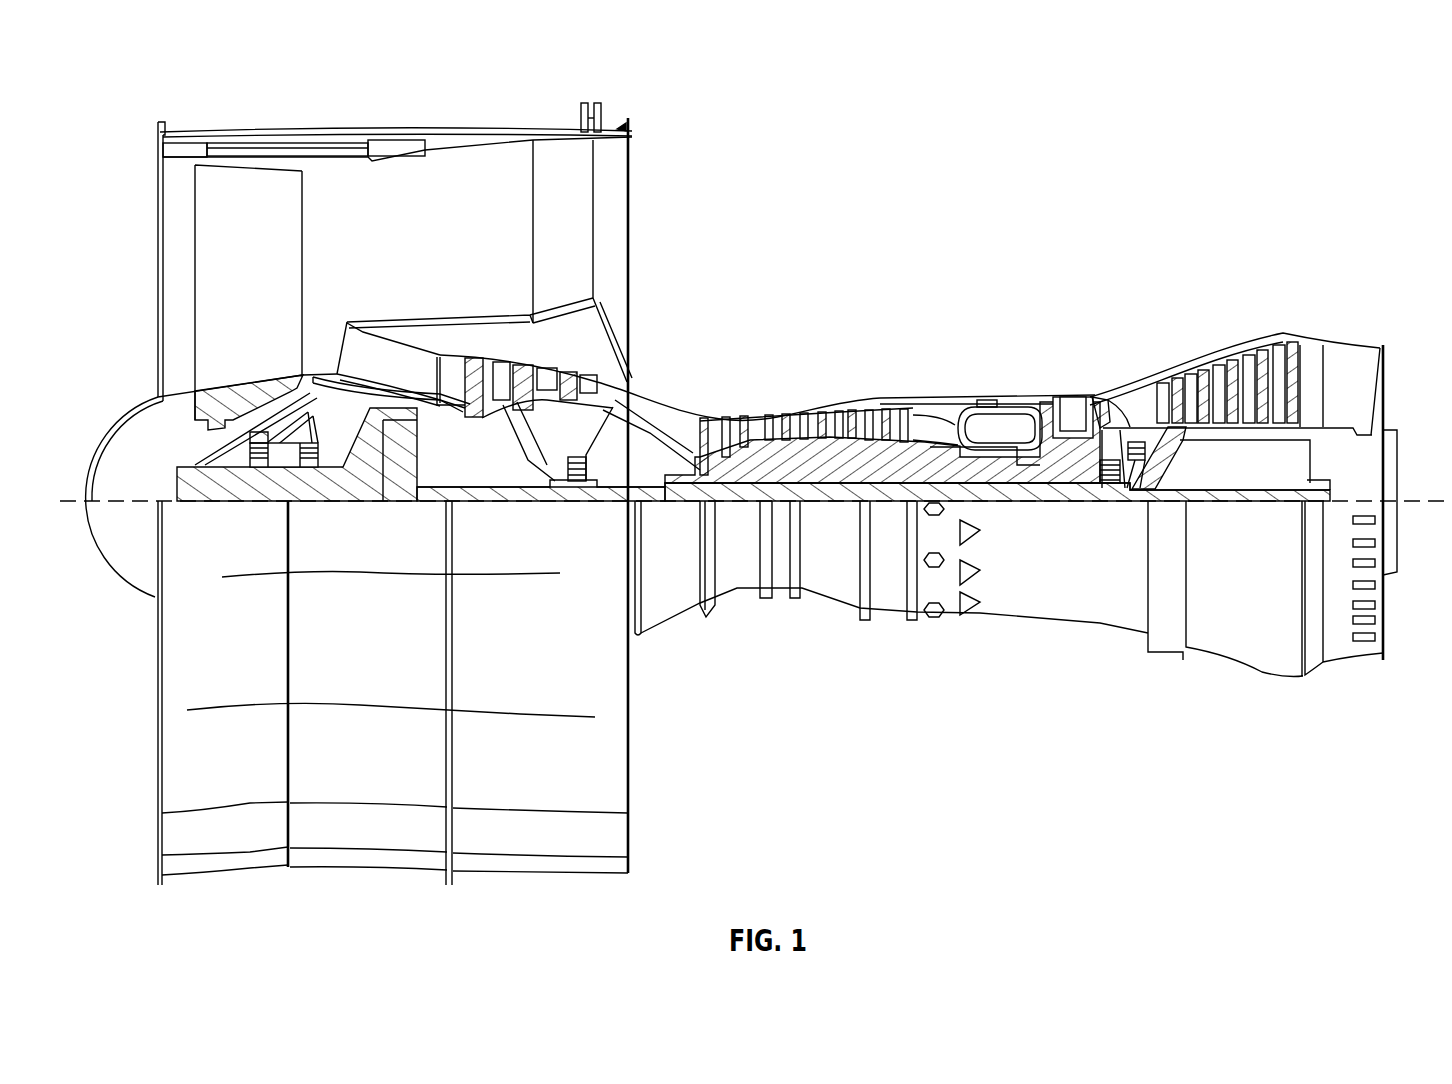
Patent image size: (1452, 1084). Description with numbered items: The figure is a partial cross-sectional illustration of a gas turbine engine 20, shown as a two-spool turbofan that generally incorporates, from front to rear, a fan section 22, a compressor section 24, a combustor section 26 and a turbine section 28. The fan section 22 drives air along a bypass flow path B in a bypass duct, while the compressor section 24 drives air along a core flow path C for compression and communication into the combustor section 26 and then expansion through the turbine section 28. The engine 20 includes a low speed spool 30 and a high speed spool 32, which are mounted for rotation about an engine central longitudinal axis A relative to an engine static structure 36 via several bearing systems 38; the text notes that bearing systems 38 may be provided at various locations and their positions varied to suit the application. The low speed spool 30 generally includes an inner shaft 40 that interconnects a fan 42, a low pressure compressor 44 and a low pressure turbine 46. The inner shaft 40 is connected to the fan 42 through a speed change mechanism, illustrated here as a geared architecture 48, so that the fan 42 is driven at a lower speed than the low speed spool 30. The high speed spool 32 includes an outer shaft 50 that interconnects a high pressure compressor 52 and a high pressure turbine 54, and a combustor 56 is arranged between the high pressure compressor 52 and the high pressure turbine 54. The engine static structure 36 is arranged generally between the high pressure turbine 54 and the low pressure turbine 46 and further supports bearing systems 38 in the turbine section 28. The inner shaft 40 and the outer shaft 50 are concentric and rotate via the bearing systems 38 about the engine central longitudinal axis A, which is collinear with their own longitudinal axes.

The gas turbine engine 20 is at (1223, 130).
The fan section 22 is at (266, 123).
The compressor section 24 is at (819, 360).
The combustor section 26 is at (975, 361).
The turbine section 28 is at (1174, 298).
The low speed spool 30 is at (852, 503).
The high speed spool 32 is at (905, 432).
The engine static structure 36 is at (893, 618).
The bearing systems 38 is at (265, 468).
The inner shaft 40 is at (643, 503).
The fan 42 is at (275, 263).
The low pressure compressor 44 is at (545, 373).
The low pressure turbine 46 is at (1240, 362).
The geared architecture 48 is at (396, 466).
The outer shaft 50 is at (1022, 484).
The high pressure compressor 52 is at (808, 466).
The high pressure turbine 54 is at (1073, 393).
The combustor 56 is at (991, 422).
The engine central longitudinal axis A is at (1405, 495).
The bypass flow path B is at (481, 230).
The core flow path C is at (354, 361).